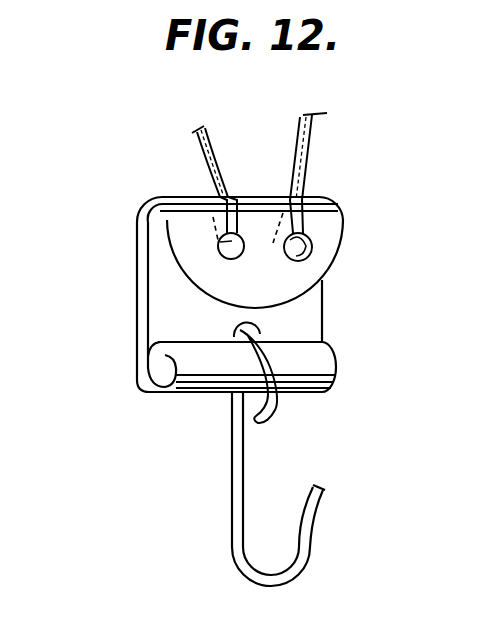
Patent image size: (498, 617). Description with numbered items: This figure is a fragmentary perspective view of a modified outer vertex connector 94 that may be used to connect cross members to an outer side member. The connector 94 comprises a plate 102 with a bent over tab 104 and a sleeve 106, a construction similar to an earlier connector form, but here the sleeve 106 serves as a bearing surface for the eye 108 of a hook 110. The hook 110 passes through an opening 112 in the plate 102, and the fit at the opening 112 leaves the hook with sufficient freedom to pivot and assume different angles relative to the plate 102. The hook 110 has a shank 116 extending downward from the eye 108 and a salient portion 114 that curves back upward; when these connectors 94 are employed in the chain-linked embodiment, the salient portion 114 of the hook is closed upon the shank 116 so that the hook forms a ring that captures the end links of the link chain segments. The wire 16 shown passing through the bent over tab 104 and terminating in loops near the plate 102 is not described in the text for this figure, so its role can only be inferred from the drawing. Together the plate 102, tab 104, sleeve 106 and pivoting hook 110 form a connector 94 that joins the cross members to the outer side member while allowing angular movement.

The wire / lead 16 is at (302, 152).
The outer vertex connector 94 is at (127, 313).
The plate 102 is at (137, 272).
The bent over tab 104 is at (195, 197).
The sleeve 106 is at (198, 367).
The eye 108 is at (272, 405).
The hook 110 is at (215, 537).
The opening 112 is at (236, 330).
The salient portion 114 is at (312, 537).
The shank 116 is at (232, 495).